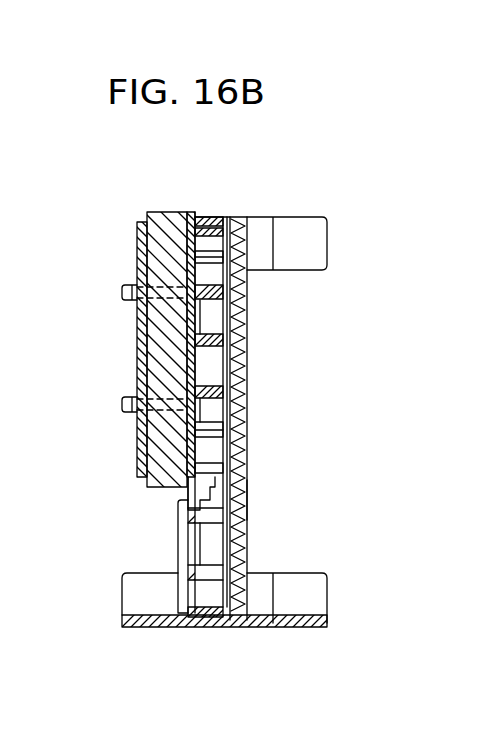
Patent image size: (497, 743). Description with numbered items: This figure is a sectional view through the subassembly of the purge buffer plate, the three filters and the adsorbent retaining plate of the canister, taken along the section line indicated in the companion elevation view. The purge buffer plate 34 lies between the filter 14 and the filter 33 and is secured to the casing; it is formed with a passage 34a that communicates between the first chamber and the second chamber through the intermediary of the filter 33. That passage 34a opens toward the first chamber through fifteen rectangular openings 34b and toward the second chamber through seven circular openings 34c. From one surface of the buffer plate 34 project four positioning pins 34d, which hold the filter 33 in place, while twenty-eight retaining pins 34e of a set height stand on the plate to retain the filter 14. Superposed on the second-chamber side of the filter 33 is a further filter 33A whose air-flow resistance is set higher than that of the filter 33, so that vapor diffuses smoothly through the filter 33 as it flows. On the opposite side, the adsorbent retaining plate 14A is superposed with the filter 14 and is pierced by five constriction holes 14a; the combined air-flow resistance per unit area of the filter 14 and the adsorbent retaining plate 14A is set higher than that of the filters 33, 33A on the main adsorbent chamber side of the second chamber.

The filter 14 is at (245, 543).
The adsorbent retaining plate 14A is at (247, 500).
The constriction holes 14a is at (247, 322).
The filter 33 is at (176, 212).
The filter 33A is at (139, 226).
The purge buffer plate 34 is at (204, 628).
The passage 34a is at (212, 372).
The rectangular openings 34b is at (180, 558).
The circular openings 34c is at (190, 321).
The positioning pins 34d is at (122, 290).
The retaining pins 34e is at (210, 335).